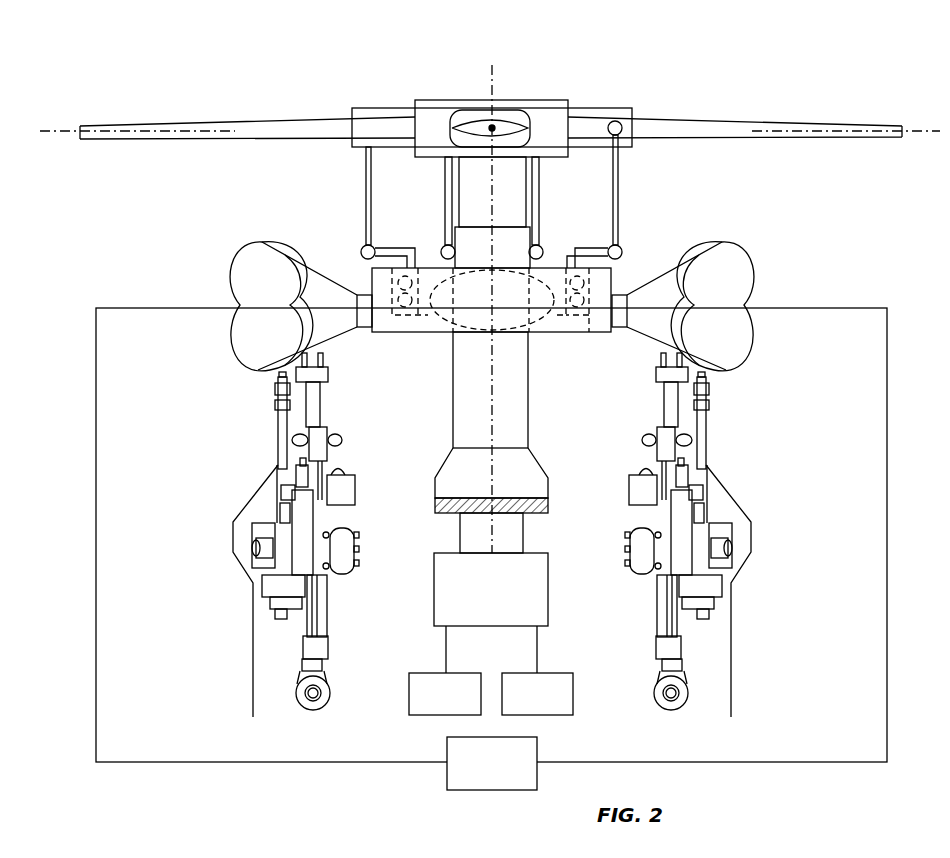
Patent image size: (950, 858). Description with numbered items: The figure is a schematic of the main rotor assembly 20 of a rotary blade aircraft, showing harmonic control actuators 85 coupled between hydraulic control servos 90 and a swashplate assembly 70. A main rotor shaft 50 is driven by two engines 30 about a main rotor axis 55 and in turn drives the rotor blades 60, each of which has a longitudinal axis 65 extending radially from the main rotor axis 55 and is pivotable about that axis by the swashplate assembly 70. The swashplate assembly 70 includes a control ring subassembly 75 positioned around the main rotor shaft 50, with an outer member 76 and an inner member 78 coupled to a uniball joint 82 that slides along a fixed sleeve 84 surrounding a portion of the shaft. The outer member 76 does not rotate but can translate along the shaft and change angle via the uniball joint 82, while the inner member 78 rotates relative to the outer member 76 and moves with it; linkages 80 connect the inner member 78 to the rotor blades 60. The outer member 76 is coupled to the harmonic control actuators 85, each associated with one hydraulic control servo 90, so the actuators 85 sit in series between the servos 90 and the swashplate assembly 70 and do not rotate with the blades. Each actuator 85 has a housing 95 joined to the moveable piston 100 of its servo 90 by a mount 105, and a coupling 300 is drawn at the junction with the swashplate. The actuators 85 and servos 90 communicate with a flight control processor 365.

The main rotor assembly 20 is at (637, 62).
The engine 30 is at (409, 690).
The main rotor shaft 50 is at (525, 525).
The main rotor axis 55 is at (490, 78).
The rotor blade 60 is at (472, 111).
The longitudinal axis 65 is at (496, 127).
The swashplate assembly 70 is at (401, 343).
The control ring subassembly 75 is at (548, 368).
The outer member 76 is at (563, 335).
The inner member 78 is at (567, 256).
The linkage 80 is at (365, 183).
The uniball joint 82 is at (435, 275).
The fixed sleeve 84 is at (440, 460).
The harmonic control actuator 85 is at (489, 284).
The hydraulic control servo 90 is at (492, 535).
The housing 95 is at (255, 245).
The moveable piston 100 is at (325, 405).
The mount 105 is at (330, 372).
The cone coupling 300 is at (360, 290).
The flight control processor 365 is at (458, 790).